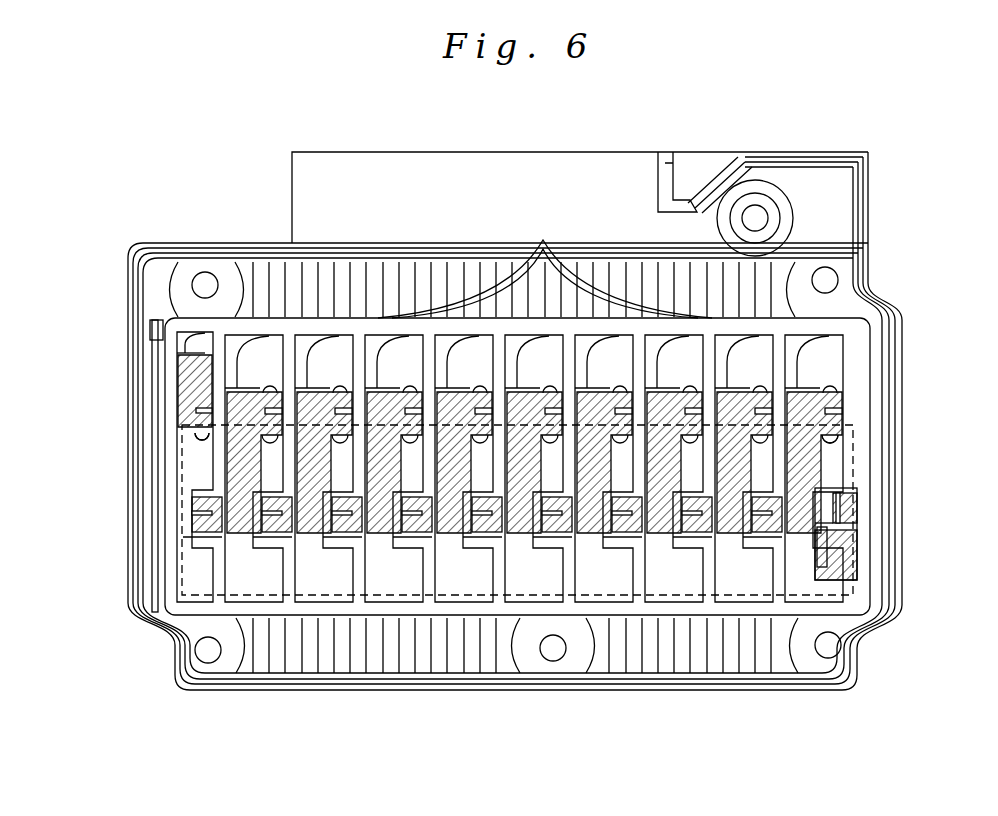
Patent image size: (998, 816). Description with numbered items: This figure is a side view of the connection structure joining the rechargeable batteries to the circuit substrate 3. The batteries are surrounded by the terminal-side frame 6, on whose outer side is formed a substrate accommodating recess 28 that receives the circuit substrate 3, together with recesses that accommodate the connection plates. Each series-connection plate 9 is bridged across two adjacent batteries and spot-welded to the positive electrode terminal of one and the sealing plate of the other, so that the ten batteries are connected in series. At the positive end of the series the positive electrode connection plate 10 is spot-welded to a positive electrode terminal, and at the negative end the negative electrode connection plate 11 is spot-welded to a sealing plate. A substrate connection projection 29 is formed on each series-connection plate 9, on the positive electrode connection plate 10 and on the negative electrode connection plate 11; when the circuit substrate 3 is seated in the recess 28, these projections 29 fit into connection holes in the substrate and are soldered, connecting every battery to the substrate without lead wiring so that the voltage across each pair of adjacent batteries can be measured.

The circuit substrate 3 is at (393, 592).
The terminal-side frame 6 is at (290, 325).
The series-connection plate 9 is at (733, 475).
The positive electrode connection plate 10 is at (190, 379).
The negative electrode connection plate 11 is at (838, 548).
The substrate accommodating recess 28 is at (752, 585).
The substrate connection projection 29 is at (203, 436).